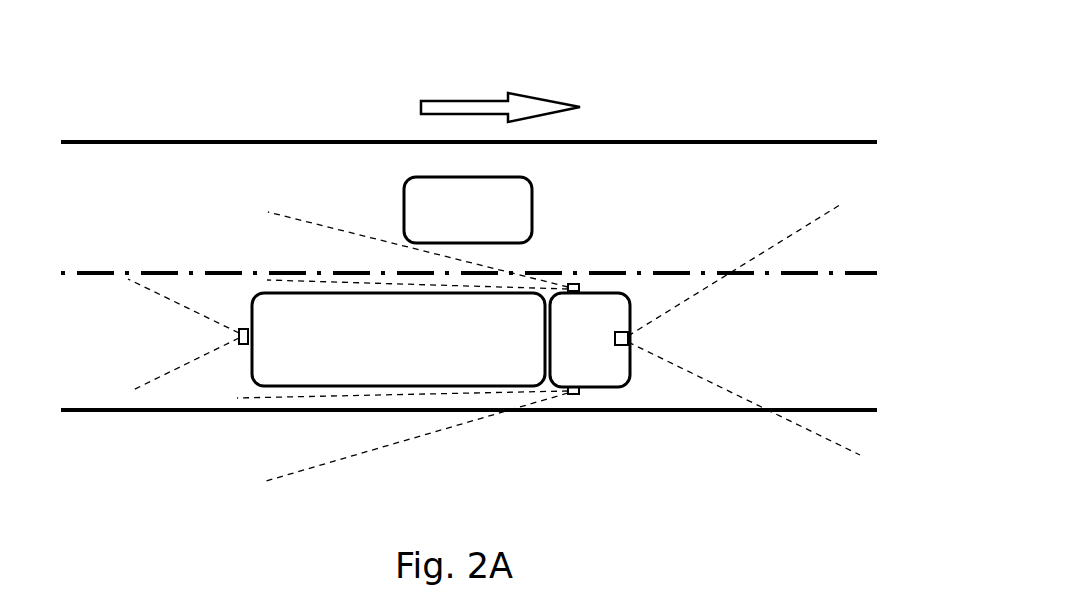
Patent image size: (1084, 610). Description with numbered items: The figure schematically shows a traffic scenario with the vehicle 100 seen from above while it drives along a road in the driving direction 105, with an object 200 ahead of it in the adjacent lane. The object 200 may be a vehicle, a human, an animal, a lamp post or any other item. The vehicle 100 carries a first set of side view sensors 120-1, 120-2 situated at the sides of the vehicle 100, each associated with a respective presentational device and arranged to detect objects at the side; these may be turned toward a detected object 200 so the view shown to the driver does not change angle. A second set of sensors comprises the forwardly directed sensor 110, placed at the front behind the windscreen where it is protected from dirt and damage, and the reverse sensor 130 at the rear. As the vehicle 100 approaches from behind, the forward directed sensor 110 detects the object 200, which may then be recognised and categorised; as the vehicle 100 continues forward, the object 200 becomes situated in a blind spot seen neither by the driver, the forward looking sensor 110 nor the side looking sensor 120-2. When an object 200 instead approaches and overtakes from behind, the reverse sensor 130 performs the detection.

The driving direction 105 is at (500, 91).
The object 200 is at (489, 223).
The vehicle 100 is at (449, 353).
The reverse sensor 130 is at (239, 335).
The side view sensor 120-2 is at (577, 284).
The side view sensor 120-1 is at (578, 393).
The forwardly directed sensor 110 is at (627, 332).